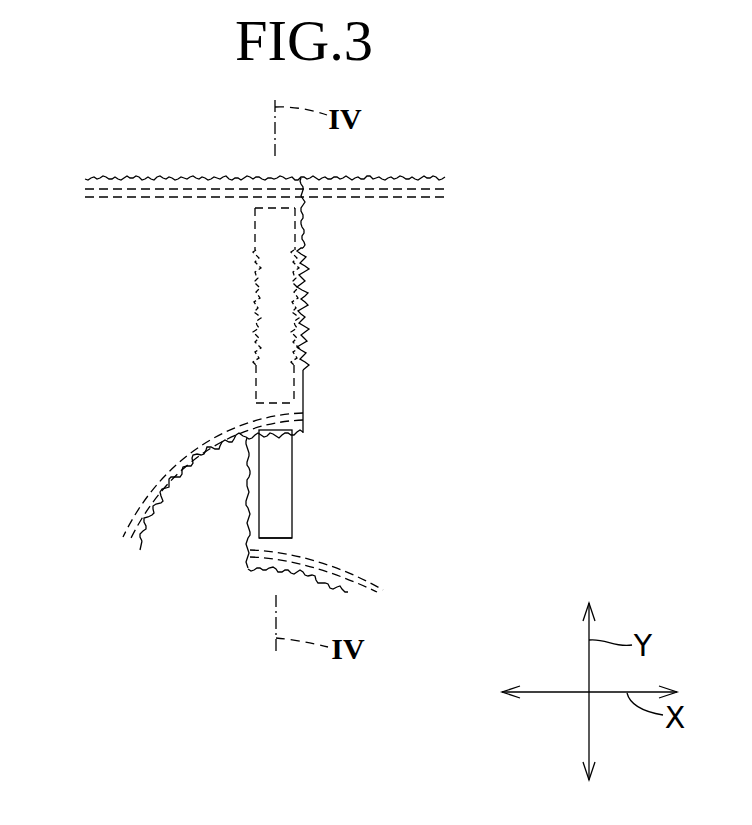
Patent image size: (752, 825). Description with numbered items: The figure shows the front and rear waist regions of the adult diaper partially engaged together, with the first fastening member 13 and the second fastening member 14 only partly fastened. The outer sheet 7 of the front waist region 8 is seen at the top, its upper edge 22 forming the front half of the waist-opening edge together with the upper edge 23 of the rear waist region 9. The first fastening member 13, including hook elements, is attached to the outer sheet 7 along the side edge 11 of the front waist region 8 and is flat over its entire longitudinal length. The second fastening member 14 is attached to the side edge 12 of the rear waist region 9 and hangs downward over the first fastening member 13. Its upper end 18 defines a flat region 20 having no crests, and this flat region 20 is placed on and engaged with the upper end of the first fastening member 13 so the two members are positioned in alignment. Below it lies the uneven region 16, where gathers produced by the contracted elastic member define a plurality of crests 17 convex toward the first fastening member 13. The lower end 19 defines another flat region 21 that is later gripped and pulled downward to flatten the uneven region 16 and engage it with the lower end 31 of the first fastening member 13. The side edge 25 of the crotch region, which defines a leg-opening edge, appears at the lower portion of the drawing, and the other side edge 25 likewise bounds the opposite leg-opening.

The outer sheet 7 is at (274, 167).
The upper edge of rear waist region 23 is at (164, 177).
The upper edge of front waist region 22 is at (412, 178).
The second fastening member 14 is at (270, 305).
The side edge of rear waist region 12 is at (339, 305).
The crest 17 is at (302, 272).
The upper end of second fastening member 18 is at (239, 309).
The flat region at upper end 20 is at (256, 228).
The uneven region 16 is at (267, 283).
The flat region at lower end 21 is at (267, 378).
The lower end of second fastening member 19 is at (256, 406).
The side edge of front waist region 11 is at (255, 524).
The side edge of crotch region 25 is at (168, 483).
The rear waist region 9 is at (115, 462).
The front waist region 8 is at (345, 528).
The lower end of first fastening member 31 is at (273, 532).
The first fastening member 13 is at (283, 485).